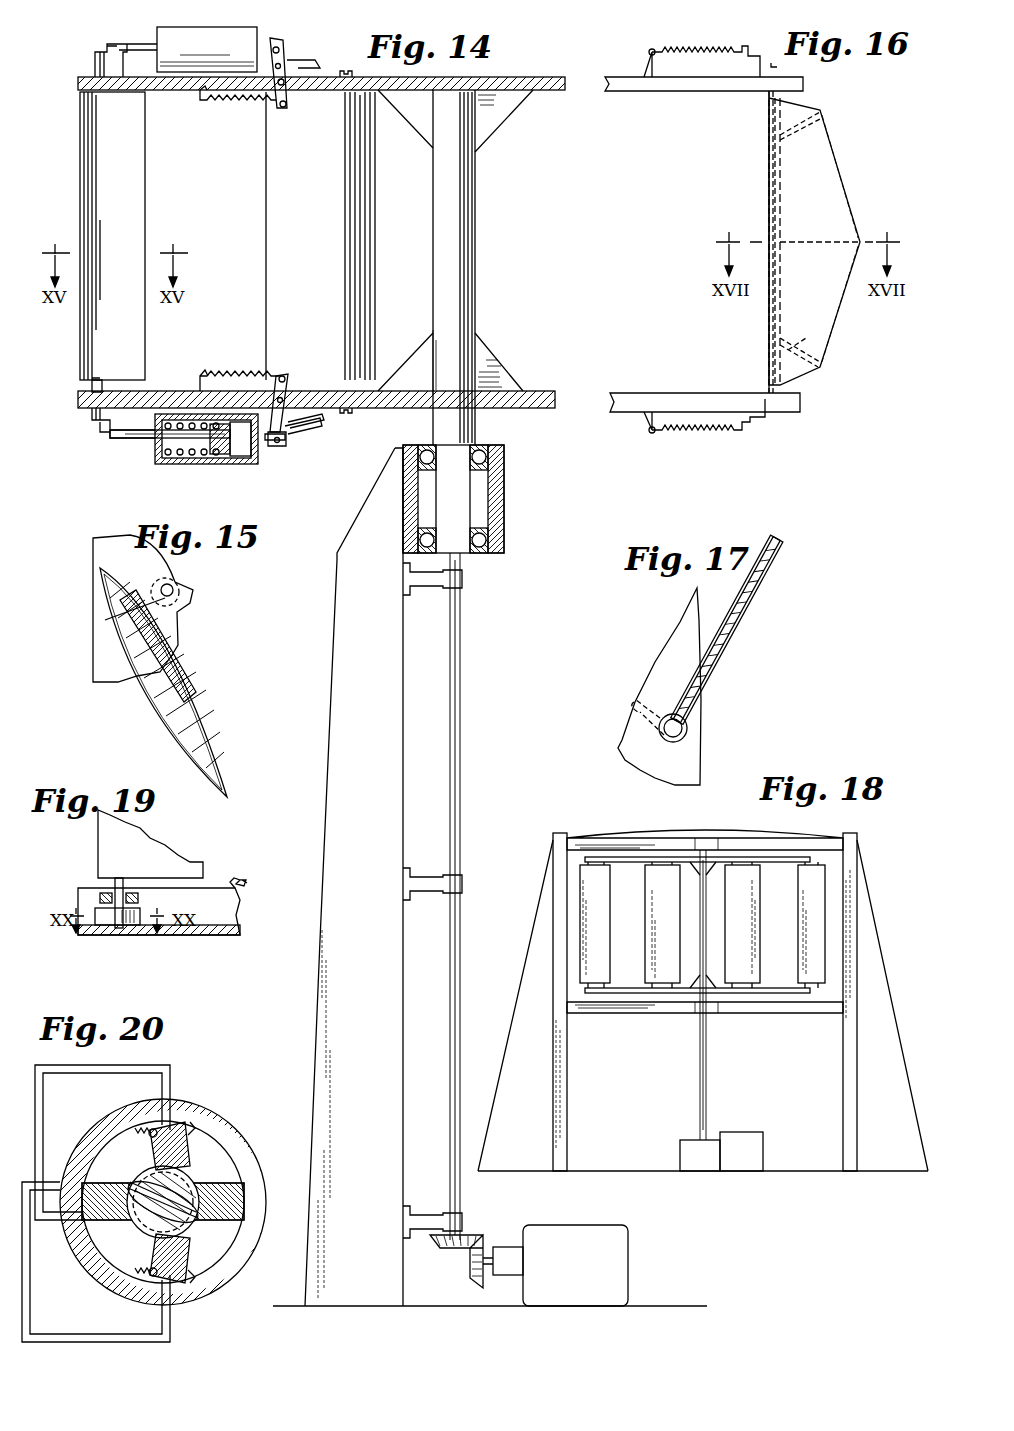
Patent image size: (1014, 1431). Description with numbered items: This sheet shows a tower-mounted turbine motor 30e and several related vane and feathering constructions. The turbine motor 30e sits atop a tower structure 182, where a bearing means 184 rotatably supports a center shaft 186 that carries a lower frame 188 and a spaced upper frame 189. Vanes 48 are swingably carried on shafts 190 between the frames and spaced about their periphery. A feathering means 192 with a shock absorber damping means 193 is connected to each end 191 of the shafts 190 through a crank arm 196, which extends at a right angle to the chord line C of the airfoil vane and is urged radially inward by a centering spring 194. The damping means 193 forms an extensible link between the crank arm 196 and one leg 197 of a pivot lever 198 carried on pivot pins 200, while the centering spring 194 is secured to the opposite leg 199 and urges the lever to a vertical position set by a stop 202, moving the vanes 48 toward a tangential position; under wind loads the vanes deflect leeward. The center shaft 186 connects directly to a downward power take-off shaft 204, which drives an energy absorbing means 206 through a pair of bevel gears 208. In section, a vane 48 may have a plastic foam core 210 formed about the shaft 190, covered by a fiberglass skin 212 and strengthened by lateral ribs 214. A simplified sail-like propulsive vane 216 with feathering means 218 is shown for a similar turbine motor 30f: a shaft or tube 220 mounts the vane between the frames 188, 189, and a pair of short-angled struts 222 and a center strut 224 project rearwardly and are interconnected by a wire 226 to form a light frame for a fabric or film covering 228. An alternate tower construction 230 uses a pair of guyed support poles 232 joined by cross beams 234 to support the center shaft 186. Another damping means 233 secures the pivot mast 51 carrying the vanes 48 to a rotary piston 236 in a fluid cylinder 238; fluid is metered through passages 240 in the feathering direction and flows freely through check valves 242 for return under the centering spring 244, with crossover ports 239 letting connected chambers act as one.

In FIG. 14, the turbine motor 30e is at (62, 105).
In FIG. 18, the turbine motor 30e is at (612, 852).
In FIG. 16, the turbine motor 30f is at (858, 118).
In FIG. 14, the vanes 48 is at (84, 194).
In FIG. 15, the vanes 48 is at (220, 750).
In FIG. 18, the vanes 48 is at (702, 925).
In FIG. 19, the vanes 48 is at (155, 840).
In FIG. 19, the pivot mast 51 is at (100, 882).
In FIG. 20, the pivot mast 51 is at (200, 1235).
In FIG. 14, the tower structure 182 is at (335, 626).
In FIG. 14, the bearing means 184 is at (504, 500).
In FIG. 14, the center shaft 186 is at (460, 457).
In FIG. 18, the center shaft 186 is at (707, 920).
In FIG. 14, the lower frame 188 is at (520, 393).
In FIG. 16, the lower frame 188 is at (653, 393).
In FIG. 14, the upper frame 189 is at (505, 78).
In FIG. 16, the upper frame 189 is at (683, 85).
In FIG. 14, the shafts 190 is at (86, 388).
In FIG. 15, the shafts 190 is at (105, 624).
In FIG. 14, the end 191 is at (100, 50).
In FIG. 14, the feathering means 192 is at (245, 30).
In FIG. 14, the damping means 193 is at (232, 460).
In FIG. 14, the centering spring 194 is at (235, 372).
In FIG. 14, the crank arm 196 is at (118, 82).
In FIG. 15, the crank arm 196 is at (178, 628).
In FIG. 14, the leg 197 is at (282, 446).
In FIG. 14, the pivot lever 198 is at (284, 112).
In FIG. 14, the leg 199 is at (284, 374).
In FIG. 14, the pivot pins 200 is at (285, 85).
In FIG. 14, the stop 202 is at (322, 418).
In FIG. 14, the power take-off shaft 204 is at (460, 700).
In FIG. 14, the energy absorbing means 206 is at (628, 1250).
In FIG. 18, the energy absorbing means 206 is at (752, 1140).
In FIG. 14, the bevel gears 208 is at (455, 1250).
In FIG. 15, the foam core 210 is at (172, 685).
In FIG. 15, the fiberglass skin 212 is at (188, 745).
In FIG. 15, the lateral ribs 214 is at (142, 690).
In FIG. 16, the propulsive vane 216 is at (838, 182).
In FIG. 17, the propulsive vane 216 is at (742, 646).
In FIG. 16, the feathering means 218 is at (725, 432).
In FIG. 16, the shaft or tube 220 is at (773, 318).
In FIG. 17, the shaft or tube 220 is at (688, 732).
In FIG. 16, the short-angled struts 222 is at (790, 150).
In FIG. 16, the center strut 224 is at (840, 238).
In FIG. 17, the center strut 224 is at (748, 608).
In FIG. 16, the wire 226 is at (838, 328).
In FIG. 17, the wire 226 is at (780, 542).
In FIG. 16, the skin panel 228 is at (829, 284).
In FIG. 17, the skin panel 228 is at (686, 696).
In FIG. 18, the tower construction 230 is at (840, 838).
In FIG. 18, the guyed support poles 232 is at (557, 880).
In FIG. 19, the damping means 233 is at (135, 910).
In FIG. 20, the damping means 233 is at (180, 1085).
In FIG. 18, the cross beams 234 is at (650, 838).
In FIG. 20, the rotary piston 236 is at (230, 1180).
In FIG. 20, the fluid cylinder 238 is at (222, 1130).
In FIG. 20, the crossover ports 239 is at (128, 1184).
In FIG. 20, the passages 240 is at (190, 1125).
In FIG. 20, the check valves 242 is at (150, 1130).
In FIG. 19, the centering spring 244 is at (218, 888).
In FIG. 15, the chord line C is at (190, 718).